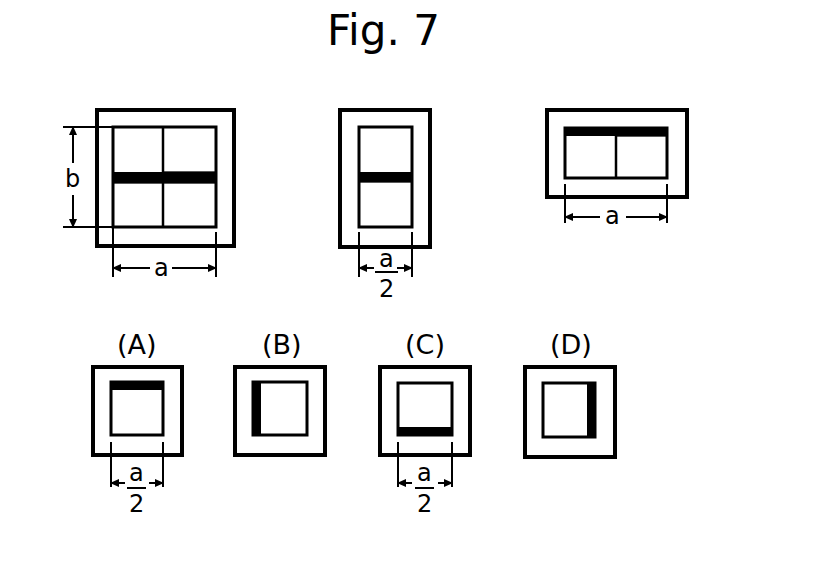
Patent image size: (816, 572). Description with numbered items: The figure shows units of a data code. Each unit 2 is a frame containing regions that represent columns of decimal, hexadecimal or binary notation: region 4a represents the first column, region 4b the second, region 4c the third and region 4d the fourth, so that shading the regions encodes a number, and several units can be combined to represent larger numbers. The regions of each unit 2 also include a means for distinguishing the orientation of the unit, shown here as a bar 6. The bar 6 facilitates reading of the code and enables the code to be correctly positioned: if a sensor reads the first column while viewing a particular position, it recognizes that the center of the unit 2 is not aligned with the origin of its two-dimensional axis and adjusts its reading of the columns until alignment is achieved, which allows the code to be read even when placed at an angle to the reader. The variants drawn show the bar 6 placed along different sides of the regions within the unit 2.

The unit 2 is at (168, 110).
The region 4a is at (135, 138).
The region 4b is at (123, 217).
The region 4c is at (202, 145).
The region 4d is at (200, 217).
The bar 6 is at (202, 184).